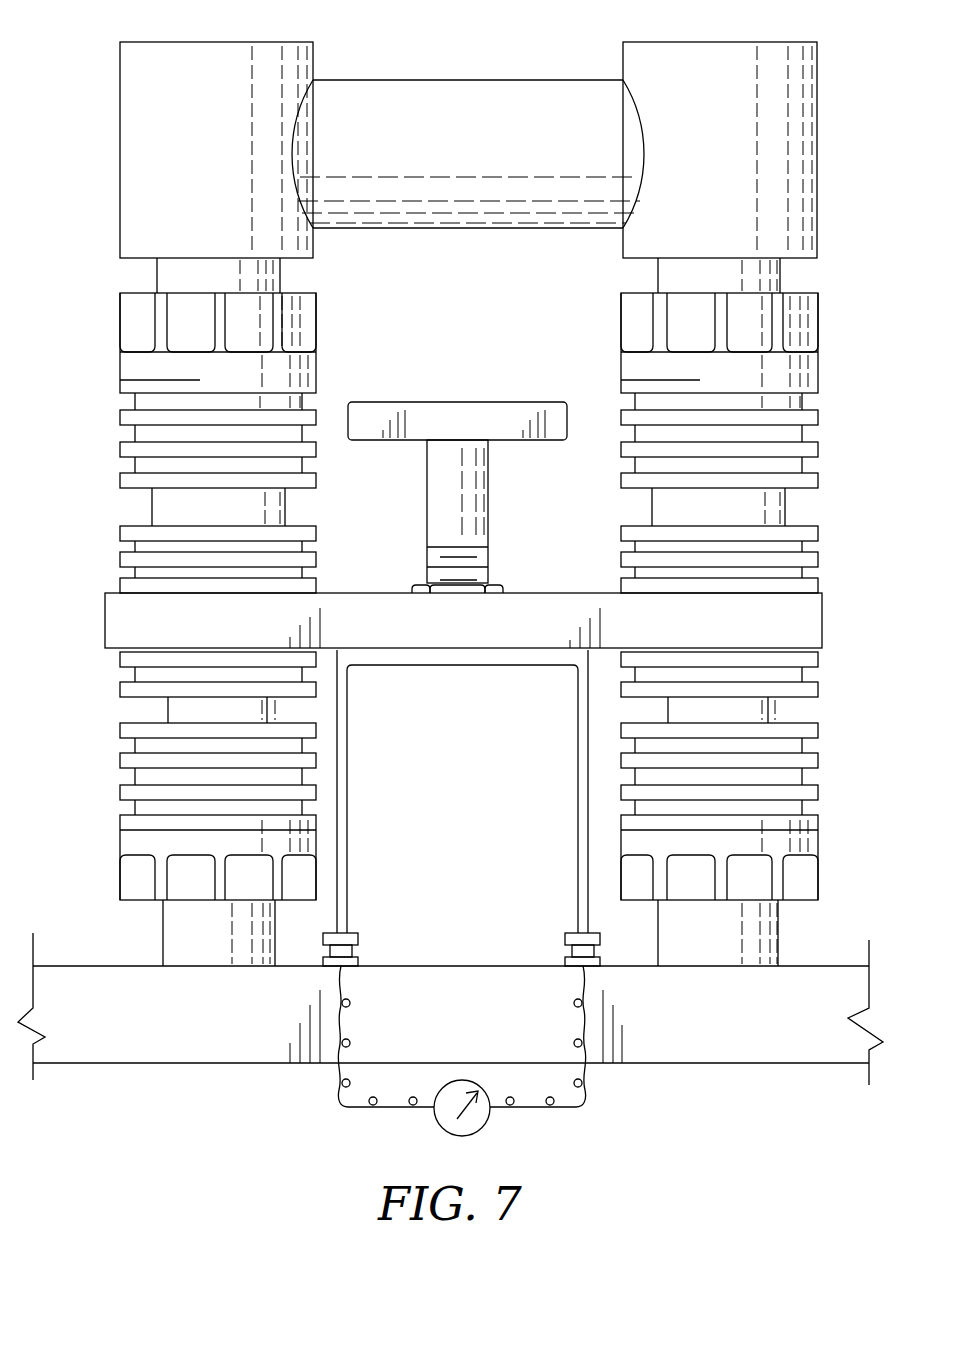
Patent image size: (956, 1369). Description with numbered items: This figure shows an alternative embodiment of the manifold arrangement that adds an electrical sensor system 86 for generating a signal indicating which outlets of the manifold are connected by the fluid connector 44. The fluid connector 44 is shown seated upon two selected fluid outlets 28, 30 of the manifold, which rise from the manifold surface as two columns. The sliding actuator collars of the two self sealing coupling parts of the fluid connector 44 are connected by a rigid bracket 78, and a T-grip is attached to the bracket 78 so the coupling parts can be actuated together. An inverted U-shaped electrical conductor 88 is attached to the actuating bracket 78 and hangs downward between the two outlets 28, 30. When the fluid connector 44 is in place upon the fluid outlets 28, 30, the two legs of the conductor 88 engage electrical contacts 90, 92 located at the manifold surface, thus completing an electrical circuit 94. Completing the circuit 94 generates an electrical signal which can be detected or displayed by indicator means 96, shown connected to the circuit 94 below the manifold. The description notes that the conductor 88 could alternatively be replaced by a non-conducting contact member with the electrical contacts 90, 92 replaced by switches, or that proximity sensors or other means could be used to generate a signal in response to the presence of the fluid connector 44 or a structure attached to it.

The fluid outlet 28 is at (163, 964).
The fluid outlet 30 is at (778, 965).
The fluid connector 44 is at (468, 167).
The bracket 78 is at (355, 598).
The electrical sensor system 86 is at (312, 977).
The electrical conductor 88 is at (345, 745).
The electrical contact 90 is at (357, 952).
The electrical contact 92 is at (570, 951).
The electrical circuit 94 is at (390, 1106).
The indicator means 96 is at (472, 1125).